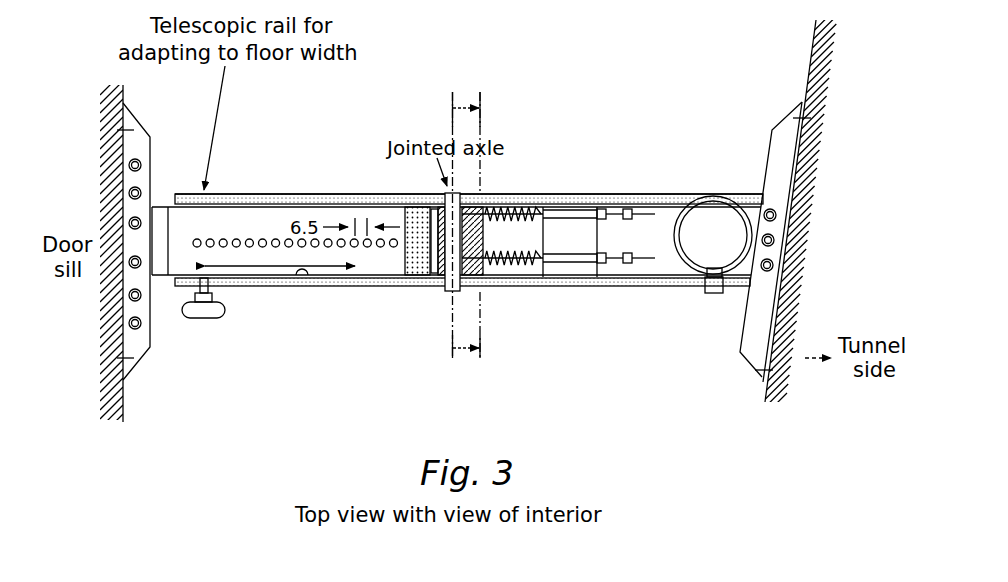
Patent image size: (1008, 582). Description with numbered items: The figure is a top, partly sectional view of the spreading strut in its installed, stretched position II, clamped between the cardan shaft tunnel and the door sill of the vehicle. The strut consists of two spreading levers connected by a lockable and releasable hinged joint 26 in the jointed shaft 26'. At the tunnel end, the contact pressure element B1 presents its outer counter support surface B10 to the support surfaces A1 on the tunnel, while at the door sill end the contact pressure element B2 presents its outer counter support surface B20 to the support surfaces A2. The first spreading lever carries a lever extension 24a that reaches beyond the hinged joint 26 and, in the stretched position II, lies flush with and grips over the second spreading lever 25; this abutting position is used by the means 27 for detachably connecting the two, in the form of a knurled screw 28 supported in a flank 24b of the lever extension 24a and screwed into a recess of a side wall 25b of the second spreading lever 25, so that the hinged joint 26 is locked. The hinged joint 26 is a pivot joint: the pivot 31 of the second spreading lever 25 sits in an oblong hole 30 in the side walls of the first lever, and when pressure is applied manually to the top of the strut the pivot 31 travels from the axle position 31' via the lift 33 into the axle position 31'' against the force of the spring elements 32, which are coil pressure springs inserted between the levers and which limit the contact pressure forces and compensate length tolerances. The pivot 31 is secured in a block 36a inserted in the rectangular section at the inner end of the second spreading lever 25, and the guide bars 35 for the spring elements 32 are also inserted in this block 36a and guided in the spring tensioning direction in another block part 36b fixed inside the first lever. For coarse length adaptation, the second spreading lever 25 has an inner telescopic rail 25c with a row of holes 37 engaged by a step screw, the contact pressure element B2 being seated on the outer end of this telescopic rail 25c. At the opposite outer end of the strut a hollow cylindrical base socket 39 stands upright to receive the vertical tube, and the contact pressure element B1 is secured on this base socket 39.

The lever extension 24a is at (216, 194).
The flank 24b is at (338, 286).
The second spreading lever 25 is at (440, 237).
The side wall 25b is at (300, 278).
The telescopic rail 25c is at (160, 268).
The hinged joint 26 is at (490, 183).
The jointed shaft 26' is at (490, 325).
The means for detachably mechanically connecting 27 is at (235, 302).
The knurled screw 28 is at (226, 311).
The oblong hole 30 is at (490, 203).
The pivot 31 is at (433, 239).
The axle position 31' is at (424, 72).
The axle position 31'' is at (526, 71).
The spring elements 32 is at (518, 270).
The lift 33 is at (462, 100).
The guide bars 35 is at (573, 211).
The block 36a is at (330, 194).
The block part 36b is at (612, 219).
The row of holes 37 is at (198, 239).
The hollow cylindrical base socket 39 is at (684, 260).
The support surfaces on the cardan shaft tunnel A1 is at (755, 389).
The support surfaces on the door sill A2 is at (133, 390).
The contact pressure element B1 is at (777, 155).
The contact pressure element B2 is at (131, 115).
The outer counter support surface B10 is at (786, 298).
The outer counter support surface B20 is at (116, 334).
The stretched position II is at (527, 146).